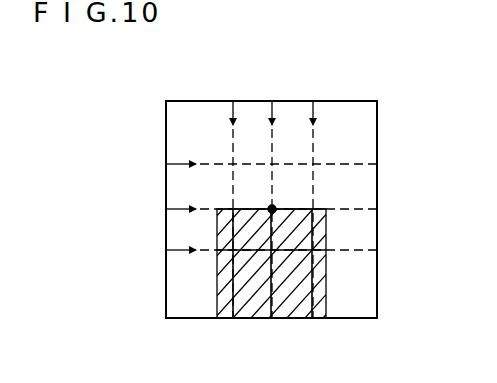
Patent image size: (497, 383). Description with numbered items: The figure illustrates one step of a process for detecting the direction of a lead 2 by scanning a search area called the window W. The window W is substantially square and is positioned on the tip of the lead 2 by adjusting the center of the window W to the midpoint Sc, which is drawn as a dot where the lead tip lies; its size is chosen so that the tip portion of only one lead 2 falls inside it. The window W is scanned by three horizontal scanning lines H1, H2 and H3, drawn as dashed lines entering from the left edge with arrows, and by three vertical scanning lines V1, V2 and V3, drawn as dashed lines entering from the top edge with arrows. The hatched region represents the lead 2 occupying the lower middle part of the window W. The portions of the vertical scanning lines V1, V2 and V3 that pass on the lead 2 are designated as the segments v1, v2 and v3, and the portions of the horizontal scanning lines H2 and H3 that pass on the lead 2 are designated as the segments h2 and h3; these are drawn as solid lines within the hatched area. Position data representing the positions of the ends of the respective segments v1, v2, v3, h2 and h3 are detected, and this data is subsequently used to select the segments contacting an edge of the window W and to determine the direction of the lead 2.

The window W is at (165, 127).
The horizontal scanning line H1 is at (154, 168).
The horizontal scanning line H2 is at (155, 210).
The horizontal scanning line H3 is at (158, 253).
The vertical scanning line V1 is at (233, 101).
The vertical scanning line V2 is at (272, 101).
The vertical scanning line V3 is at (313, 101).
The lead 2 is at (228, 262).
The segment of vertical scanning line v1 is at (233, 287).
The segment of vertical scanning line v2 is at (272, 288).
The segment of vertical scanning line v3 is at (316, 286).
The segment of horizontal scanning line h2 is at (307, 213).
The segment of horizontal scanning line h3 is at (300, 253).
The midpoint Sc is at (272, 209).